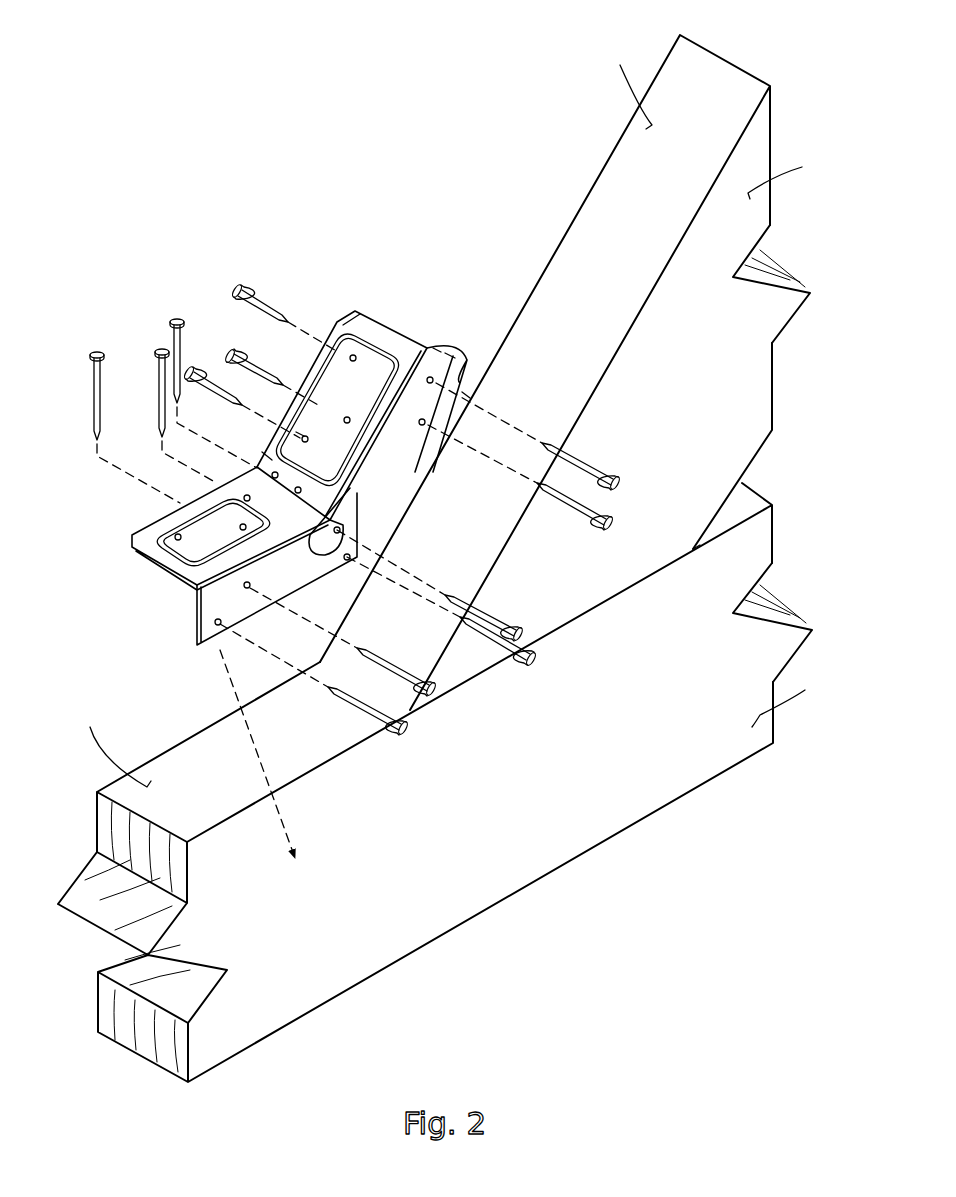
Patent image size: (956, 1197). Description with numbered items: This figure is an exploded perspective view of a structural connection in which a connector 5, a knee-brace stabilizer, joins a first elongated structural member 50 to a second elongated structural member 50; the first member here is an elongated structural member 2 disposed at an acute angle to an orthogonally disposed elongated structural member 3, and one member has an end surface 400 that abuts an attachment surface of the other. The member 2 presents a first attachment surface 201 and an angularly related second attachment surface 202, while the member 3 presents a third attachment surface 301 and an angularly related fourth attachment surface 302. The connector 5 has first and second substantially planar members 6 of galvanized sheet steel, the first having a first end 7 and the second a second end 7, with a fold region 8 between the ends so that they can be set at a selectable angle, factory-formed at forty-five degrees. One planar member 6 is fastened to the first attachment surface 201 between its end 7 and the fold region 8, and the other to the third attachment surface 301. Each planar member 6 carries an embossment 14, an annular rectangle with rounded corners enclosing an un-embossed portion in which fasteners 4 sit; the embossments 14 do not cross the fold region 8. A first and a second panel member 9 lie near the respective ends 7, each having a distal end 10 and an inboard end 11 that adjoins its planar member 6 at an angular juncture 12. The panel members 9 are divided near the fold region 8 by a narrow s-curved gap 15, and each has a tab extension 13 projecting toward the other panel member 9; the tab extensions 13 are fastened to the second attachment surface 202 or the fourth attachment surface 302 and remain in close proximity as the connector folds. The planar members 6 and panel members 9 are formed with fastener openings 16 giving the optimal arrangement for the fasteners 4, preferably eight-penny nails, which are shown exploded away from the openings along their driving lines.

The elongated structural member 2 is at (578, 372).
The first attachment surface 201 is at (635, 84).
The second attachment surface 202 is at (792, 173).
The orthogonally disposed elongated structural member 3 is at (448, 782).
The third attachment surface 301 is at (114, 745).
The fourth attachment surface 302 is at (795, 704).
The end surface 400 is at (693, 553).
The elongated structural member 50 is at (773, 365).
The fastener 4 is at (177, 319).
The connector 5 is at (127, 552).
The substantially planar member 6 is at (289, 469).
The end 7 is at (372, 318).
The fold region 8 is at (265, 457).
The panel member 9 is at (451, 352).
The distal end 10 is at (468, 396).
The inboard end 11 is at (437, 350).
The angular juncture 12 is at (403, 377).
The tab extension 13 is at (353, 563).
The embossment 14 is at (350, 312).
The s-curved gap 15 is at (300, 436).
The fastener opening 16 is at (433, 423).